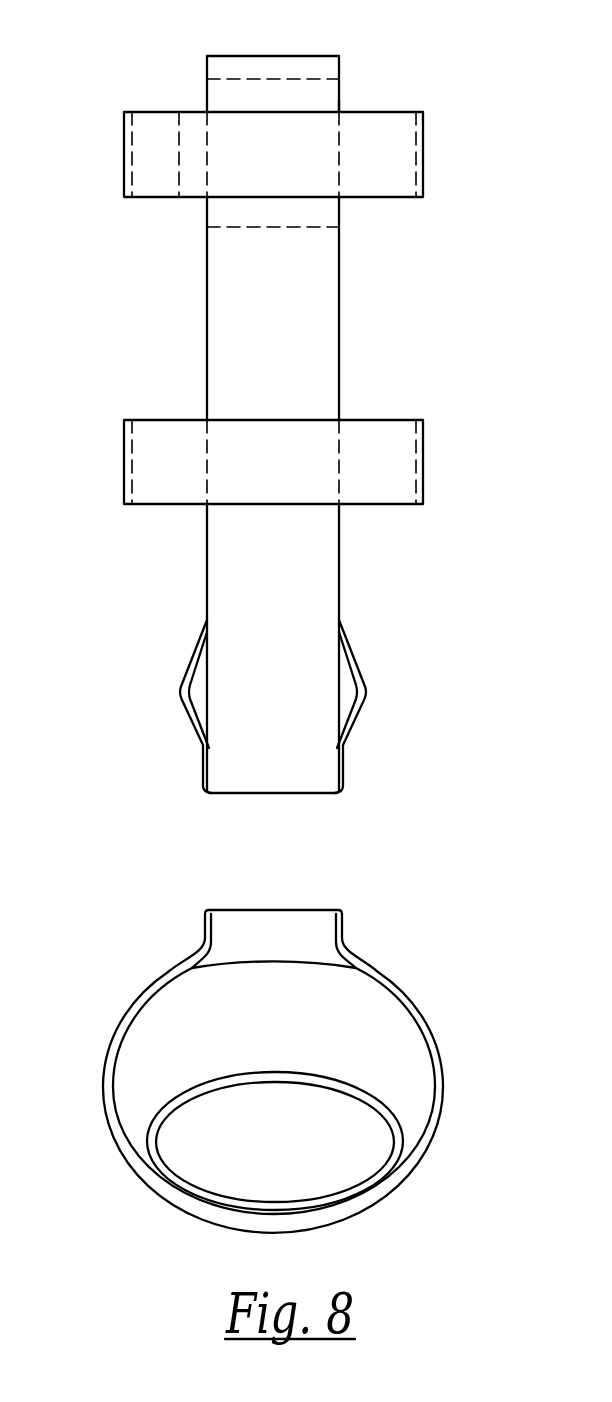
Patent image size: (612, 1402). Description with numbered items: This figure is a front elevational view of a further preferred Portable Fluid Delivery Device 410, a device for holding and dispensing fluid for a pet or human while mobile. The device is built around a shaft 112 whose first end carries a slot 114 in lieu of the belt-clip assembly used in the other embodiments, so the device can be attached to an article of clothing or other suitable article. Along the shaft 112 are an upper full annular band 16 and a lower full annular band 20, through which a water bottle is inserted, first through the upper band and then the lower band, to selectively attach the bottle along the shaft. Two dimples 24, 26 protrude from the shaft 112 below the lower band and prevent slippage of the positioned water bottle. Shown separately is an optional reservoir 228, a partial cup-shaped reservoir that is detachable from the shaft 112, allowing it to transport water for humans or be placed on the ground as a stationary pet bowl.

The Portable Fluid Delivery Device 410 is at (283, 55).
The slot 114 is at (343, 110).
The upper full annular band 16 is at (127, 158).
The shaft 112 is at (328, 320).
The lower full annular band 20 is at (127, 463).
The dimple 24 is at (185, 700).
The dimple 26 is at (359, 708).
The reservoir 228 is at (395, 1027).